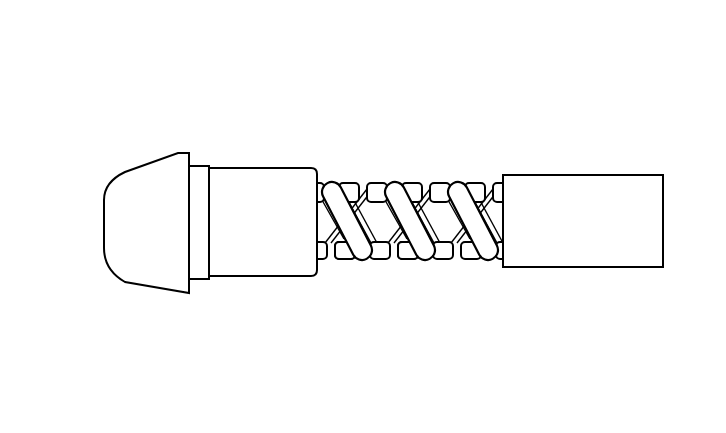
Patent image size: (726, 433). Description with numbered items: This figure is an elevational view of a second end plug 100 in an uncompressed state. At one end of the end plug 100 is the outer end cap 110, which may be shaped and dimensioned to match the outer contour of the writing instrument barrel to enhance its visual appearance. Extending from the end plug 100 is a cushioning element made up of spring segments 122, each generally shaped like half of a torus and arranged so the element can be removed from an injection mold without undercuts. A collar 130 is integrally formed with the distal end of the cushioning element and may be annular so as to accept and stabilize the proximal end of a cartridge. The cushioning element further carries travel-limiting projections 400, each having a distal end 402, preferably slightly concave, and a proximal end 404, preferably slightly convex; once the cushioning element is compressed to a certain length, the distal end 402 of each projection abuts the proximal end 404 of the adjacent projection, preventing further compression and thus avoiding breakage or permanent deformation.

The end plug 100 is at (265, 107).
The outer end cap 110 is at (133, 168).
The spring segment 122 is at (455, 185).
The collar 130 is at (587, 183).
The travel-limiting projection 400 is at (440, 182).
The distal end 402 is at (333, 254).
The proximal end 404 is at (395, 254).